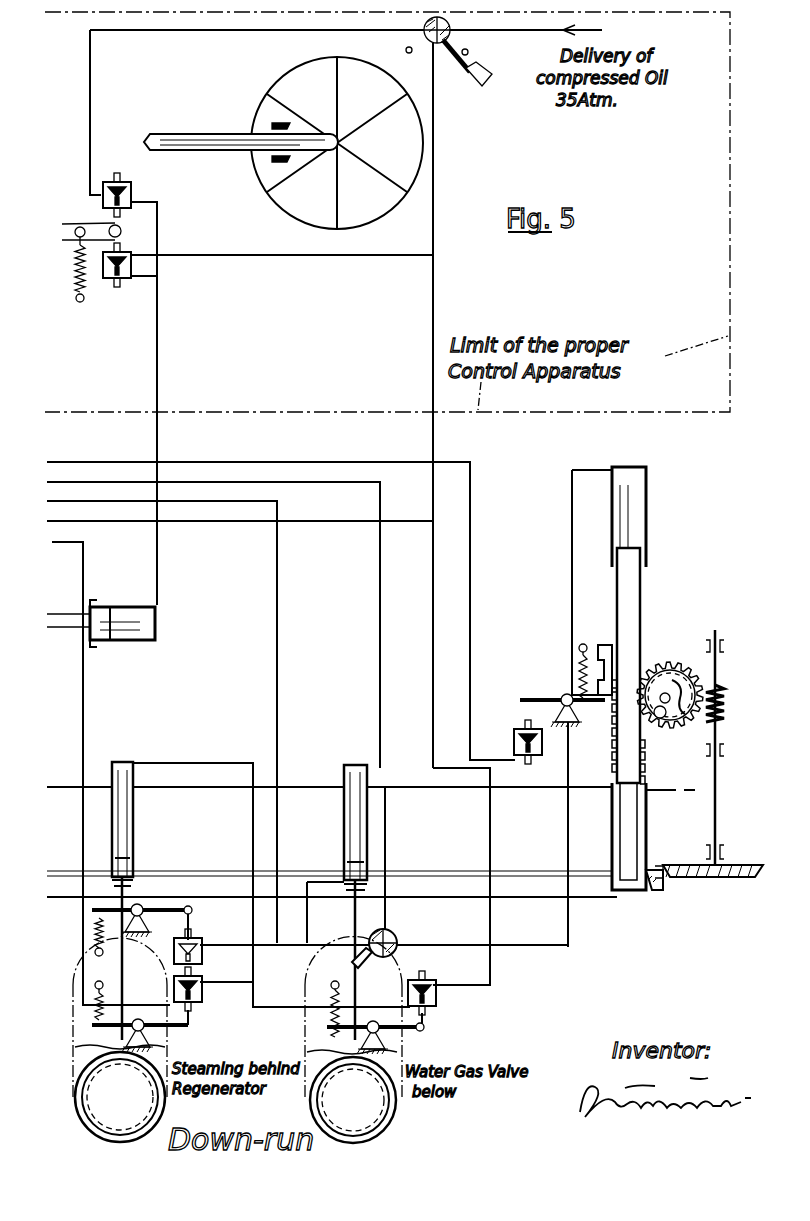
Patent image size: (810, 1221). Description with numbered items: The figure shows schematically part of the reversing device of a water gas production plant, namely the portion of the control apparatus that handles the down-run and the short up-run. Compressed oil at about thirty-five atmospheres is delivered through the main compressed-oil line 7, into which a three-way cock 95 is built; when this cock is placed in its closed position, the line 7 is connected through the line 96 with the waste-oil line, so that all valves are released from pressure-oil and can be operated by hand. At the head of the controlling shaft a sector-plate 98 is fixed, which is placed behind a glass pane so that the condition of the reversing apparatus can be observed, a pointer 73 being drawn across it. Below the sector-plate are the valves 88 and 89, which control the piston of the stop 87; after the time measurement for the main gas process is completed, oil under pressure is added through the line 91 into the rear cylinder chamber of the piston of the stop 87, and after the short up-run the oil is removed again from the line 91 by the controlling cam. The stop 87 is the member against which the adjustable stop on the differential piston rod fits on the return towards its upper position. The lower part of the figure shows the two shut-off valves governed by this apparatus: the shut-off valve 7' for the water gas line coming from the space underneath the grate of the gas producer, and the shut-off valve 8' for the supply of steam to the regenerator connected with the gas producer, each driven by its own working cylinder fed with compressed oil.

The main compressed-oil line 7 is at (290, 41).
The sector-plate 98 is at (270, 97).
The pointer lever 73 is at (192, 150).
The valve 88 is at (133, 192).
The valve 89 is at (122, 288).
The line 91 is at (276, 262).
The three-way cock 95 is at (452, 37).
The line 96 is at (433, 200).
The stop 87 is at (128, 642).
The shut-off valve 8' is at (137, 952).
The shut-off valve 7' is at (370, 954).